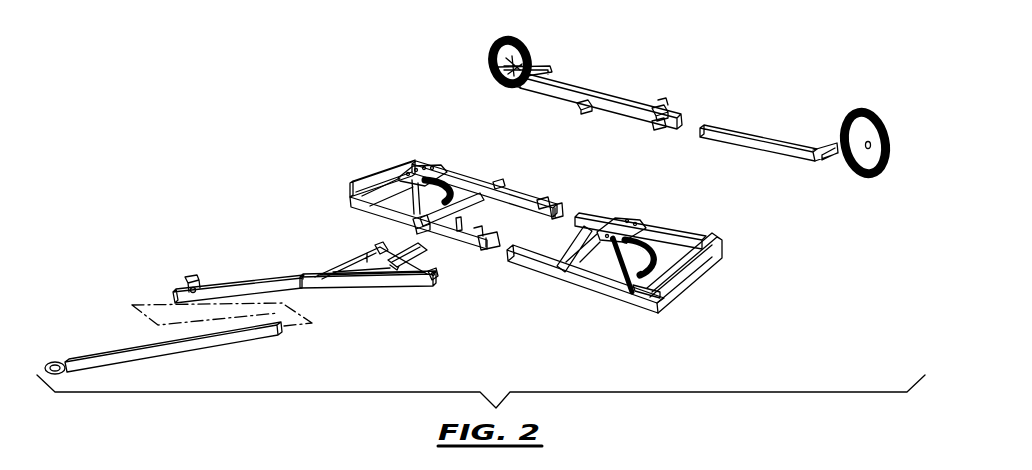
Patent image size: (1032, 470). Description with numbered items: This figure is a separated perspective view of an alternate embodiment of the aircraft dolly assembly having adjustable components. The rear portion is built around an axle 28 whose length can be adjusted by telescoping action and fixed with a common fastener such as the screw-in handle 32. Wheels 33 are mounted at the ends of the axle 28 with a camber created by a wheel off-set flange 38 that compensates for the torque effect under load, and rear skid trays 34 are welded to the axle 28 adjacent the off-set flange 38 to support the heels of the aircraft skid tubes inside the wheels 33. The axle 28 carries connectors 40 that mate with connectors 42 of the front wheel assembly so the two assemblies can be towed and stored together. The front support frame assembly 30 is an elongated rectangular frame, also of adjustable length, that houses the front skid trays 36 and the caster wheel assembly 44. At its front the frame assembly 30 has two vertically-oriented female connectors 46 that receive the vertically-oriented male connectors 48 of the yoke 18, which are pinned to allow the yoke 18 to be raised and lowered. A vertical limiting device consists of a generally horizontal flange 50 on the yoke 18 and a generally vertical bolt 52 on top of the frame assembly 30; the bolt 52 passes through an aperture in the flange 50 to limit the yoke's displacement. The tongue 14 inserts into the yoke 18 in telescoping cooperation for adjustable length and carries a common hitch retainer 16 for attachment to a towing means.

The tongue 14 is at (157, 353).
The hitch retainer 16 is at (62, 363).
The yoke 18 is at (272, 275).
The axle 28 is at (570, 88).
The front support frame assembly 30 is at (372, 208).
The screw-in handle 32 is at (652, 108).
The wheels 33 is at (524, 33).
The rear skid trays 34 is at (520, 86).
The front skid trays 36 is at (375, 172).
The wheel off-set flange 38 is at (535, 62).
The connectors 40 is at (652, 125).
The connectors 42 is at (500, 183).
The caster wheel assembly 44 is at (447, 165).
The connectors 46 is at (462, 222).
The connectors 48 is at (378, 249).
The flange 50 is at (443, 251).
The bolt 52 is at (462, 227).